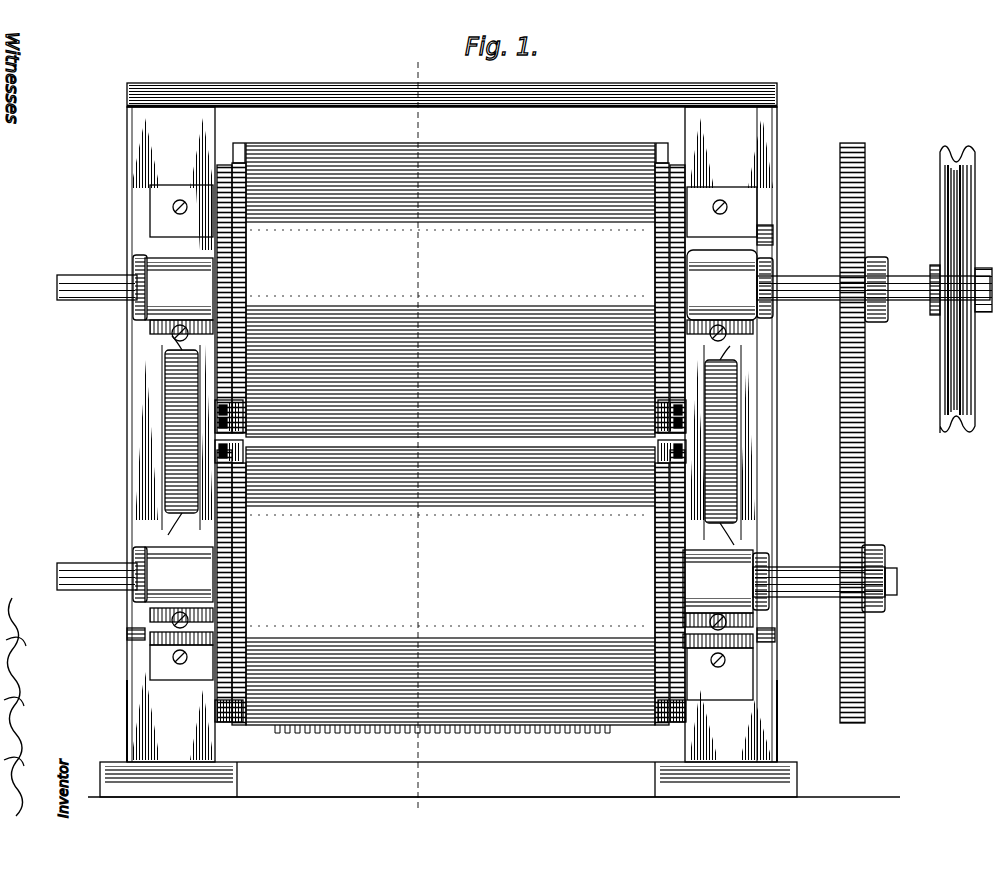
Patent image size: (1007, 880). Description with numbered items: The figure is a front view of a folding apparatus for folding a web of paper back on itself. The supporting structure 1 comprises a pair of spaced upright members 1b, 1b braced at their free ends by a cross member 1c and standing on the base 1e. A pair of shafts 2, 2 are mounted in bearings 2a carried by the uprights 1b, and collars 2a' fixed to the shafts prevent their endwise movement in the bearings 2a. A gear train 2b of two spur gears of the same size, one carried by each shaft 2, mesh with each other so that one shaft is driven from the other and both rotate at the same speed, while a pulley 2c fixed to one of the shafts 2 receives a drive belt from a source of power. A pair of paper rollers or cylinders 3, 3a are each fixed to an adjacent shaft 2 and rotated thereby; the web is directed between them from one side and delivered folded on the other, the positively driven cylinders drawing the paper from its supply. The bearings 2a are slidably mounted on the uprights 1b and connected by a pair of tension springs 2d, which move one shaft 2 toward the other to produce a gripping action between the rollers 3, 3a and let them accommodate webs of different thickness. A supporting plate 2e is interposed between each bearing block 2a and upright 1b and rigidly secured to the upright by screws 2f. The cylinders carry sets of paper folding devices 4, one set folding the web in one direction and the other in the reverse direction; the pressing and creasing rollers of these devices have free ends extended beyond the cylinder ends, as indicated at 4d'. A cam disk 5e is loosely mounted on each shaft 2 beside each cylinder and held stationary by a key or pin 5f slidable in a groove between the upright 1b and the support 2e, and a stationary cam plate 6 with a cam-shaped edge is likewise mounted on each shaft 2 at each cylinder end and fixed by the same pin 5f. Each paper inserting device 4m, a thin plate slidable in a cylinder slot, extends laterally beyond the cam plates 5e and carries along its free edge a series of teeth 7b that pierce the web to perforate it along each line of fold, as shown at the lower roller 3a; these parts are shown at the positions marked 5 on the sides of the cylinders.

The supporting structure 1 is at (434, 434).
The spaced members 1b is at (126, 676).
The cross member 1c is at (298, 98).
The base 1e is at (300, 797).
The shafts 2 is at (56, 292).
The bearings 2a is at (452, 443).
The collars 2a' is at (443, 427).
The gear train 2b is at (868, 433).
The pulley 2c is at (938, 382).
The tension springs 2d is at (180, 445).
The supporting plate 2e is at (160, 478).
The screws 2f is at (172, 206).
The paper roller 3 is at (378, 152).
The paper roller 3a is at (450, 586).
The paper folding devices 4 is at (418, 438).
The extended roller ends 4d' is at (450, 273).
The paper inserting device 4m is at (220, 420).
The pinion 5 is at (238, 146).
The cam disk 5e is at (240, 290).
The key or pin 5f is at (792, 640).
The stationary cam plate 6 is at (226, 310).
The teeth 7b is at (520, 735).